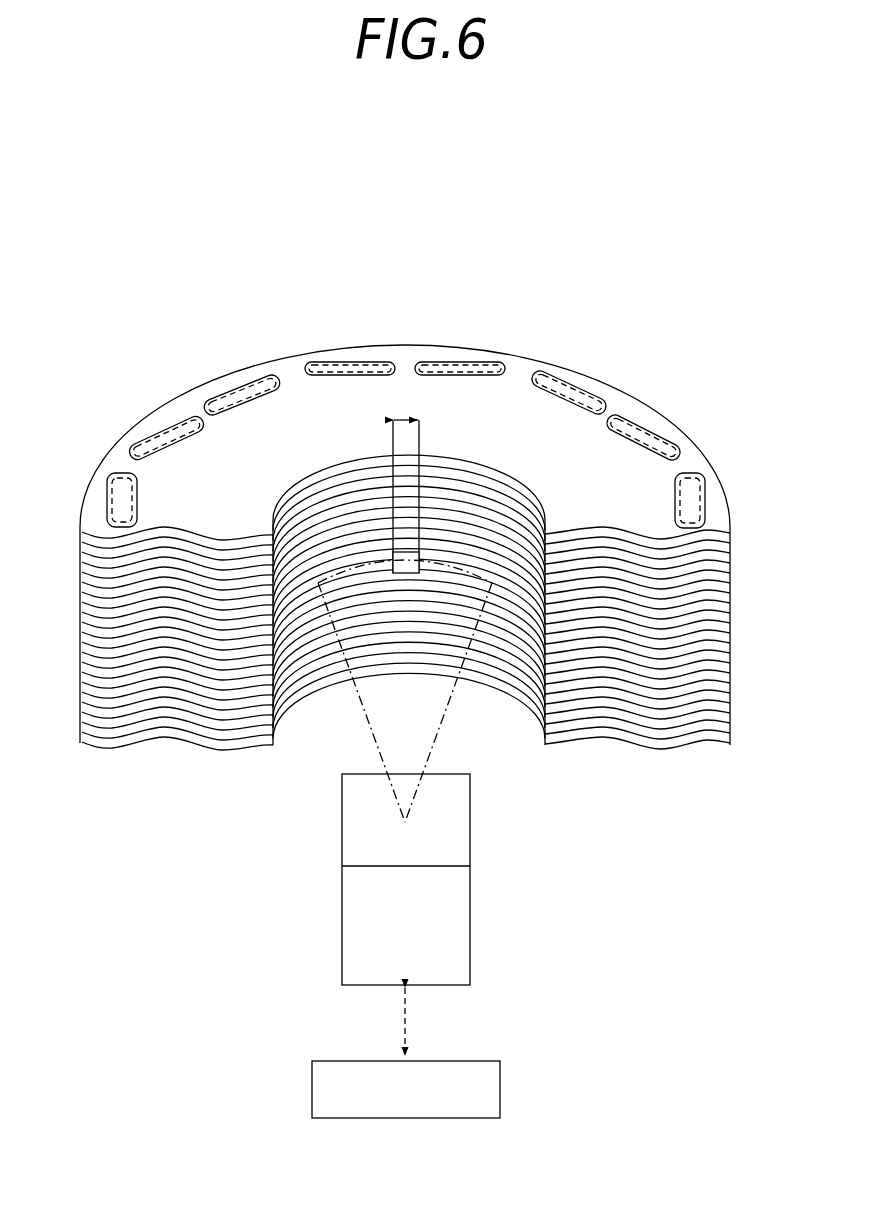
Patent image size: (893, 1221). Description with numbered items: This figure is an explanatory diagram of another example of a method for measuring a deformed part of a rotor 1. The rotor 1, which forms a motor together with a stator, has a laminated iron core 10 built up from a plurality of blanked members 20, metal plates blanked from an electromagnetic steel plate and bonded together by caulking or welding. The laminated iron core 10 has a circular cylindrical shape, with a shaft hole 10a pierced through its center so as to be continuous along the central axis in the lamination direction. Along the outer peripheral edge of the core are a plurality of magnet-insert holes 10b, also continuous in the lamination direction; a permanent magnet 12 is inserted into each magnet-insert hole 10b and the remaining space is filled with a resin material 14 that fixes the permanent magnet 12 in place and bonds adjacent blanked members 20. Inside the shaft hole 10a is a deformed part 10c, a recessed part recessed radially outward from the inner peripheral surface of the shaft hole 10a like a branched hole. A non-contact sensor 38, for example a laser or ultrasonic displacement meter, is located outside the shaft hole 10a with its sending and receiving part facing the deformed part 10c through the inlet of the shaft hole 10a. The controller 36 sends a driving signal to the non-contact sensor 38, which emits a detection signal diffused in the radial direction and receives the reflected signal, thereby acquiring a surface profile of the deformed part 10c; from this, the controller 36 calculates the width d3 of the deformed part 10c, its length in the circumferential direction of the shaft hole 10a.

The rotor 1 is at (654, 343).
The laminated iron core 10 is at (105, 784).
The shaft hole 10a is at (497, 528).
The magnet-insert hole 10b is at (158, 433).
The deformed part 10c is at (385, 555).
The permanent magnet 12 is at (647, 422).
The resin material 14 is at (553, 372).
The blanked member 20 is at (699, 753).
The controller 36 is at (500, 1087).
The non-contact sensor 38 is at (470, 913).
The width of the deformed part d3 is at (409, 415).